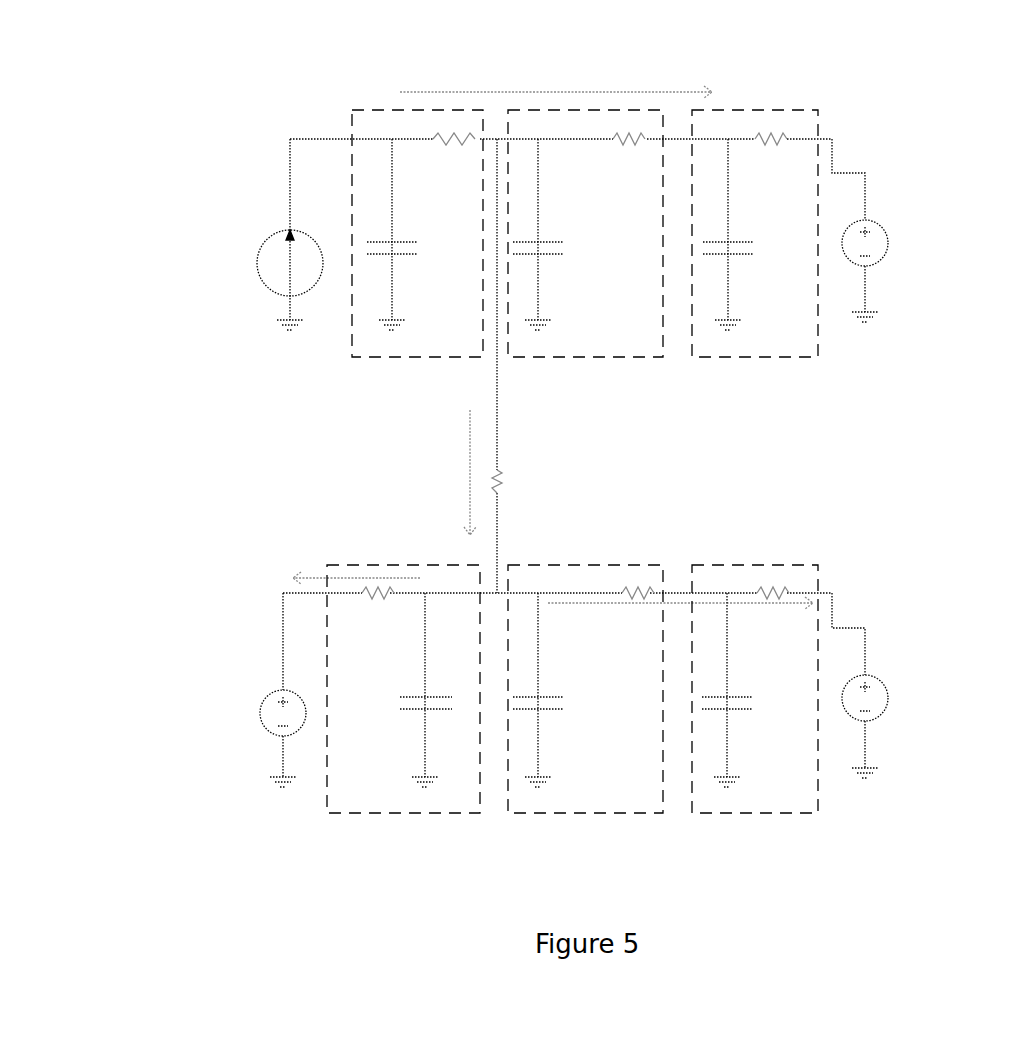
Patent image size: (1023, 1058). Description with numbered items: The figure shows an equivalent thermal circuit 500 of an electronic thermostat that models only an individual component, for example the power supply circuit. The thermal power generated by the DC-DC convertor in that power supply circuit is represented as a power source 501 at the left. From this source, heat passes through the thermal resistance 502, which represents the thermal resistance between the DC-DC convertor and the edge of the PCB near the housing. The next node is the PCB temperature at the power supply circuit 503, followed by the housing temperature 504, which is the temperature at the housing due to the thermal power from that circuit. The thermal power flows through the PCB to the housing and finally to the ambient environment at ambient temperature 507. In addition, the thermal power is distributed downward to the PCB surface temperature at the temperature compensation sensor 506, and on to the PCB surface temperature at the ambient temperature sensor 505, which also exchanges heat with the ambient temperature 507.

The equivalent thermal circuit 500 is at (576, 460).
The thermal power Pd3 501 is at (258, 252).
The thermal resistance Rth3 502 is at (456, 168).
The PCB temperature Ts3 503 is at (541, 110).
The housing temperature Th3 504 is at (731, 111).
The PCB surface temperature Ts 505 is at (722, 566).
The PCB surface temperature Tc1 506 is at (549, 568).
The ambient temperature 507 is at (882, 262).